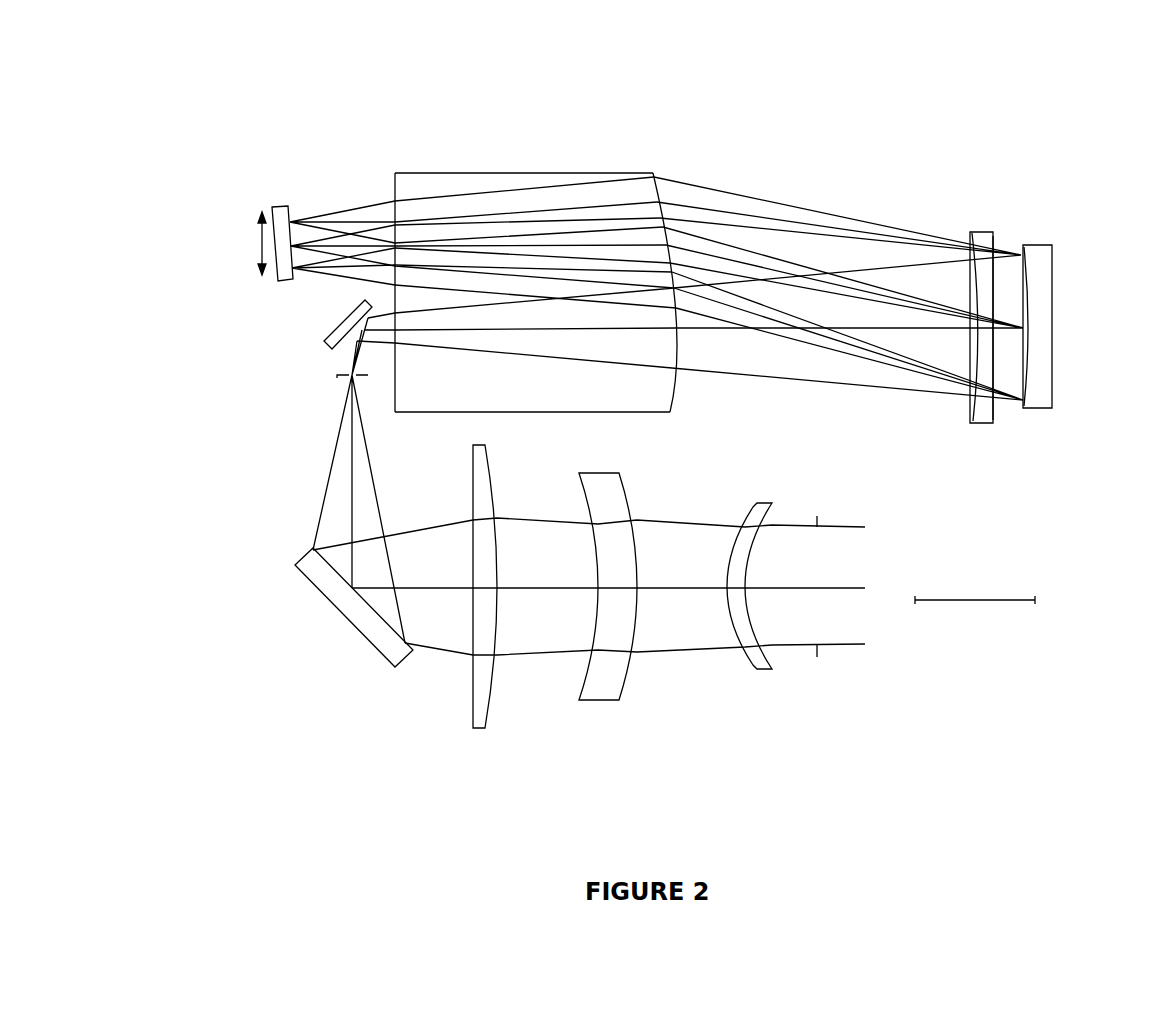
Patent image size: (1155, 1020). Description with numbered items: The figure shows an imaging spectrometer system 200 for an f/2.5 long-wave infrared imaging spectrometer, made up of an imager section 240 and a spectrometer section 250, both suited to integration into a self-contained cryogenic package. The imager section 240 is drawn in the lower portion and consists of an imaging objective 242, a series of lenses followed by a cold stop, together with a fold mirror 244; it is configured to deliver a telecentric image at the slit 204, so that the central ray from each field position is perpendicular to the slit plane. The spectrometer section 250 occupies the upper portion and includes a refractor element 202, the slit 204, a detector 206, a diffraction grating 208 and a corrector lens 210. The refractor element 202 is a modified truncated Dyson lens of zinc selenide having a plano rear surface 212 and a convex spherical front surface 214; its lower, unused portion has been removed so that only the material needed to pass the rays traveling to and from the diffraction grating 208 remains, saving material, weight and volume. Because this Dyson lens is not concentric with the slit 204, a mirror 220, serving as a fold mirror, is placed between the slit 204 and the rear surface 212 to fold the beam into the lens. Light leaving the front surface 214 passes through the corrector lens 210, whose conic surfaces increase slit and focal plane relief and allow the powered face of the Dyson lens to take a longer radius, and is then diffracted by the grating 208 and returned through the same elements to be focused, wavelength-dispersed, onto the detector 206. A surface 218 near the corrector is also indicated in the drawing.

The imaging spectrometer system 200 is at (467, 80).
The refractor element 202 is at (508, 173).
The slit 204 is at (337, 378).
The detector 206 is at (281, 205).
The diffraction grating 208 is at (1028, 360).
The corrector lens 210 is at (978, 232).
The rear surface 212 is at (393, 176).
The front surface 214 is at (655, 173).
The lens surface 218 is at (1000, 242).
The mirror 220 is at (330, 330).
The imager section 240 is at (176, 564).
The imaging objective 242 is at (499, 750).
The fold mirror 244 is at (305, 548).
The spectrometer section 250 is at (178, 224).